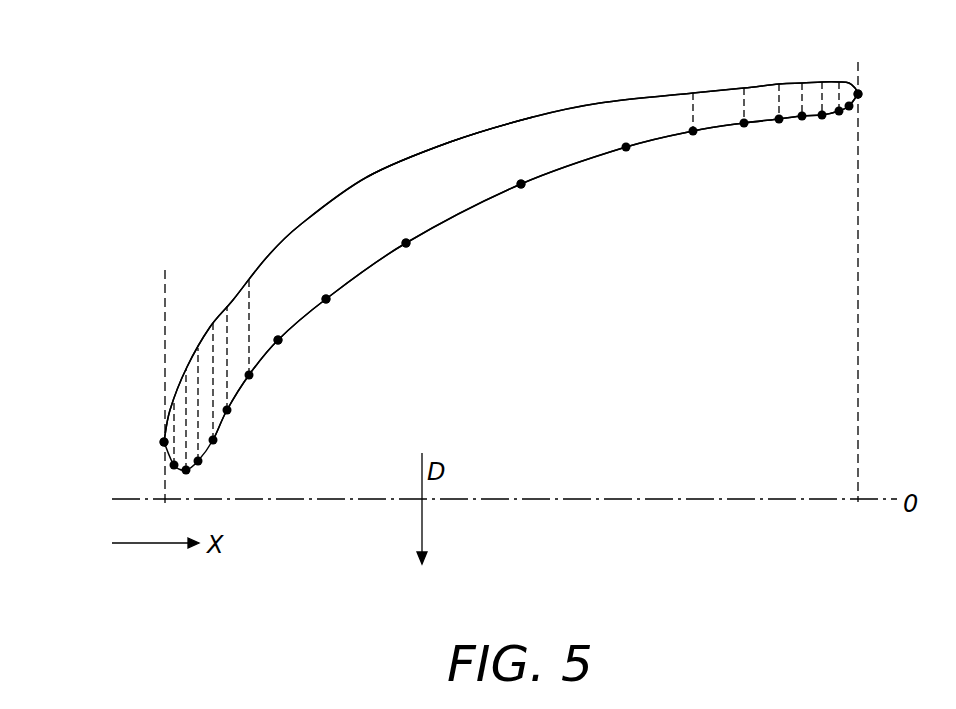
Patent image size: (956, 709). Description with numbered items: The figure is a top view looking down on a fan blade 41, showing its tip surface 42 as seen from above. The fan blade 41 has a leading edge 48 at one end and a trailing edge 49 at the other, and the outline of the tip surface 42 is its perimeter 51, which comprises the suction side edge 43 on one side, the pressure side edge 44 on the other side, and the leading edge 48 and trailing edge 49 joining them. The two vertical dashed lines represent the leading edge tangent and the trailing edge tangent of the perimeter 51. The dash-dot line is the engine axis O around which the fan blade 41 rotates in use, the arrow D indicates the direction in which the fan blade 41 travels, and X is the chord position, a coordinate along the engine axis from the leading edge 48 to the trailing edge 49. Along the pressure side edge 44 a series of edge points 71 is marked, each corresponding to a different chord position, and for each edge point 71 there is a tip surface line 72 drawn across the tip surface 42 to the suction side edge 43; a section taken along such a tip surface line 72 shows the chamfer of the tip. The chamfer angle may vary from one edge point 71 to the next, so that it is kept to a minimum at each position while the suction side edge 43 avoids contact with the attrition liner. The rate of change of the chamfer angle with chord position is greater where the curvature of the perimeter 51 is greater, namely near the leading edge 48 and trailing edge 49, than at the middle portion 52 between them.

The fan blade 41 is at (182, 163).
The tip surface 42 is at (370, 203).
The suction side edge 43 is at (542, 117).
The pressure side edge 44 is at (580, 160).
The leading edge 48 is at (162, 441).
The trailing edge 49 is at (862, 93).
The perimeter 51 is at (665, 92).
The middle portion 52 is at (457, 158).
The edge point 71 is at (328, 302).
The tip surface line 72 is at (253, 298).